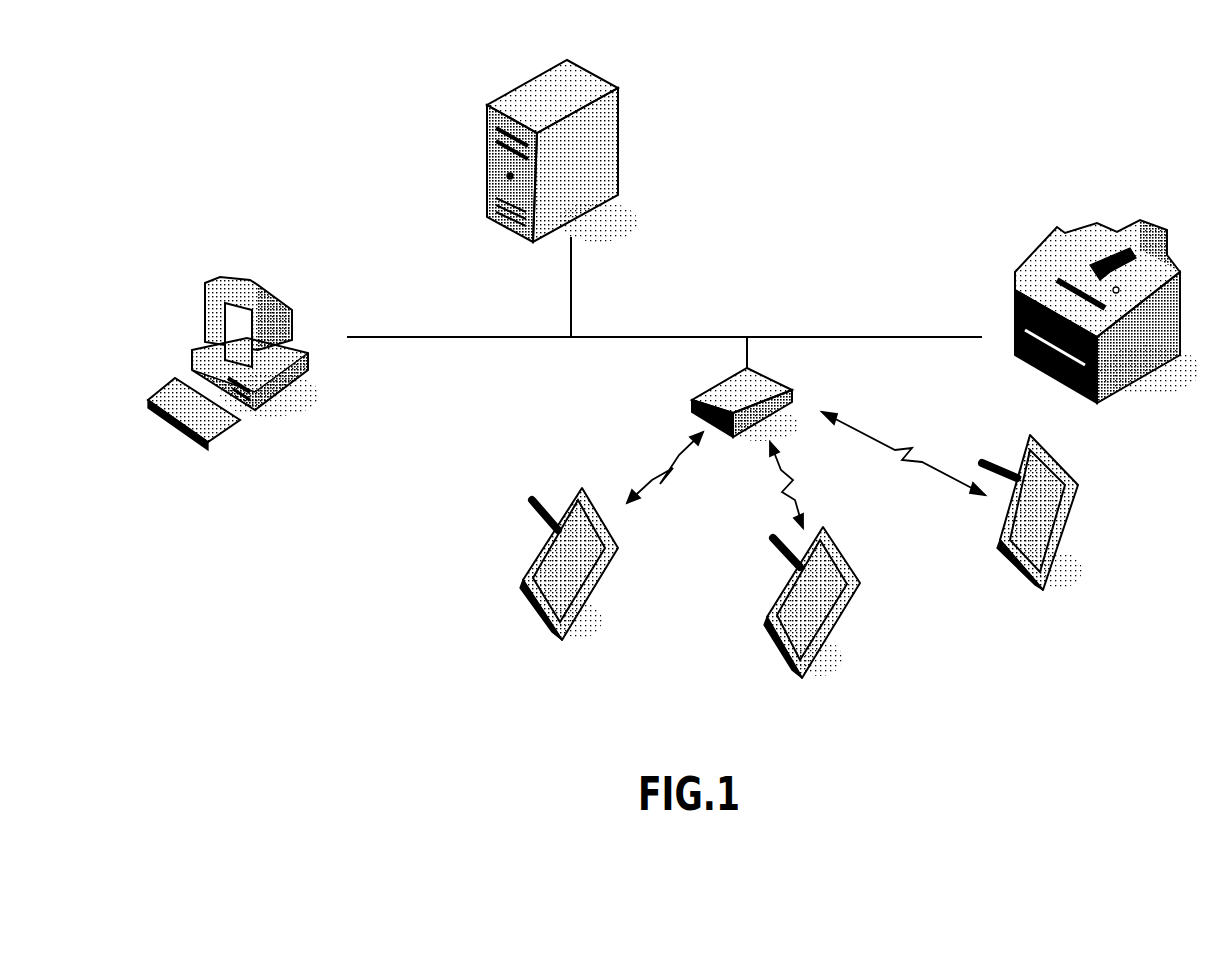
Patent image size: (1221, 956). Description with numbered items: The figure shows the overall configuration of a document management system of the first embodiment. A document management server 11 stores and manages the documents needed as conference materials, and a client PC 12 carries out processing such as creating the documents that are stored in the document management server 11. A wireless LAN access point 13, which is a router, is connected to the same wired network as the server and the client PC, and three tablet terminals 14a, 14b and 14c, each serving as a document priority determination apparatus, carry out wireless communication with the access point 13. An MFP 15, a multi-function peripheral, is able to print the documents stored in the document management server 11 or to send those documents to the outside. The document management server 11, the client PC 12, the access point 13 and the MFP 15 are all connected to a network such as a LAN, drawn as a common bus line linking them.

The document management server 11 is at (602, 160).
The client PC 12 is at (292, 310).
The access point 13 is at (700, 395).
The tablet terminal 14a is at (528, 565).
The tablet terminal 14b is at (768, 605).
The tablet terminal 14c is at (997, 557).
The MFP 15 is at (1037, 262).